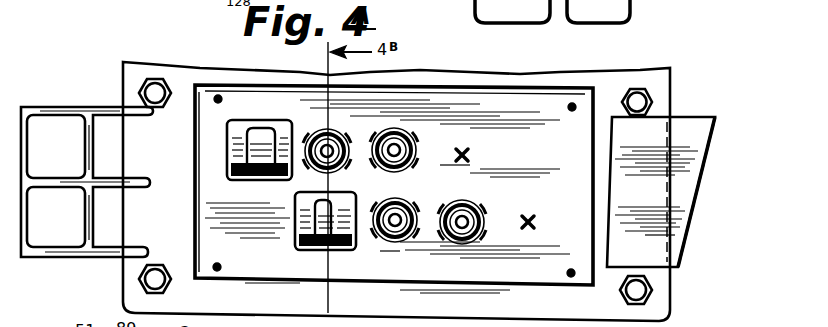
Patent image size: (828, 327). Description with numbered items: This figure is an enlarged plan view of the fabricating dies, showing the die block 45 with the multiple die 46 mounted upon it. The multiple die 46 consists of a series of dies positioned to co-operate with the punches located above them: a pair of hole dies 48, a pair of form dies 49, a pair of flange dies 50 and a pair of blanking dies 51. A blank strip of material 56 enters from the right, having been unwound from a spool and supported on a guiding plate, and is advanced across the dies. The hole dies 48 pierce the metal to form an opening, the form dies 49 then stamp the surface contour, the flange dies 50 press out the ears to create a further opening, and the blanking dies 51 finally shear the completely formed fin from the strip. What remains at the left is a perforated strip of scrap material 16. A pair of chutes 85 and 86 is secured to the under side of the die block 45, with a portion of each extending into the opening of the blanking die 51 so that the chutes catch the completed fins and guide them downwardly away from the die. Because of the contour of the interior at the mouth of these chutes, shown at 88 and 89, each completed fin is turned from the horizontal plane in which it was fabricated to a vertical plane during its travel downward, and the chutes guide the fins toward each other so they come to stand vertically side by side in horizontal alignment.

The perforated strip of scrap material 16 is at (61, 107).
The die block 45 is at (396, 191).
The multiple die 46 is at (232, 97).
The hole dies 48 is at (526, 213).
The form dies 49 is at (416, 152).
The flange dies 50 is at (395, 203).
The blanking dies 51 is at (244, 180).
The blank strip of material 56 is at (702, 123).
The chute 85 is at (262, 133).
The chute 86 is at (325, 213).
The chute mouth interior contour 88 is at (320, 250).
The chute mouth interior contour 89 is at (227, 143).